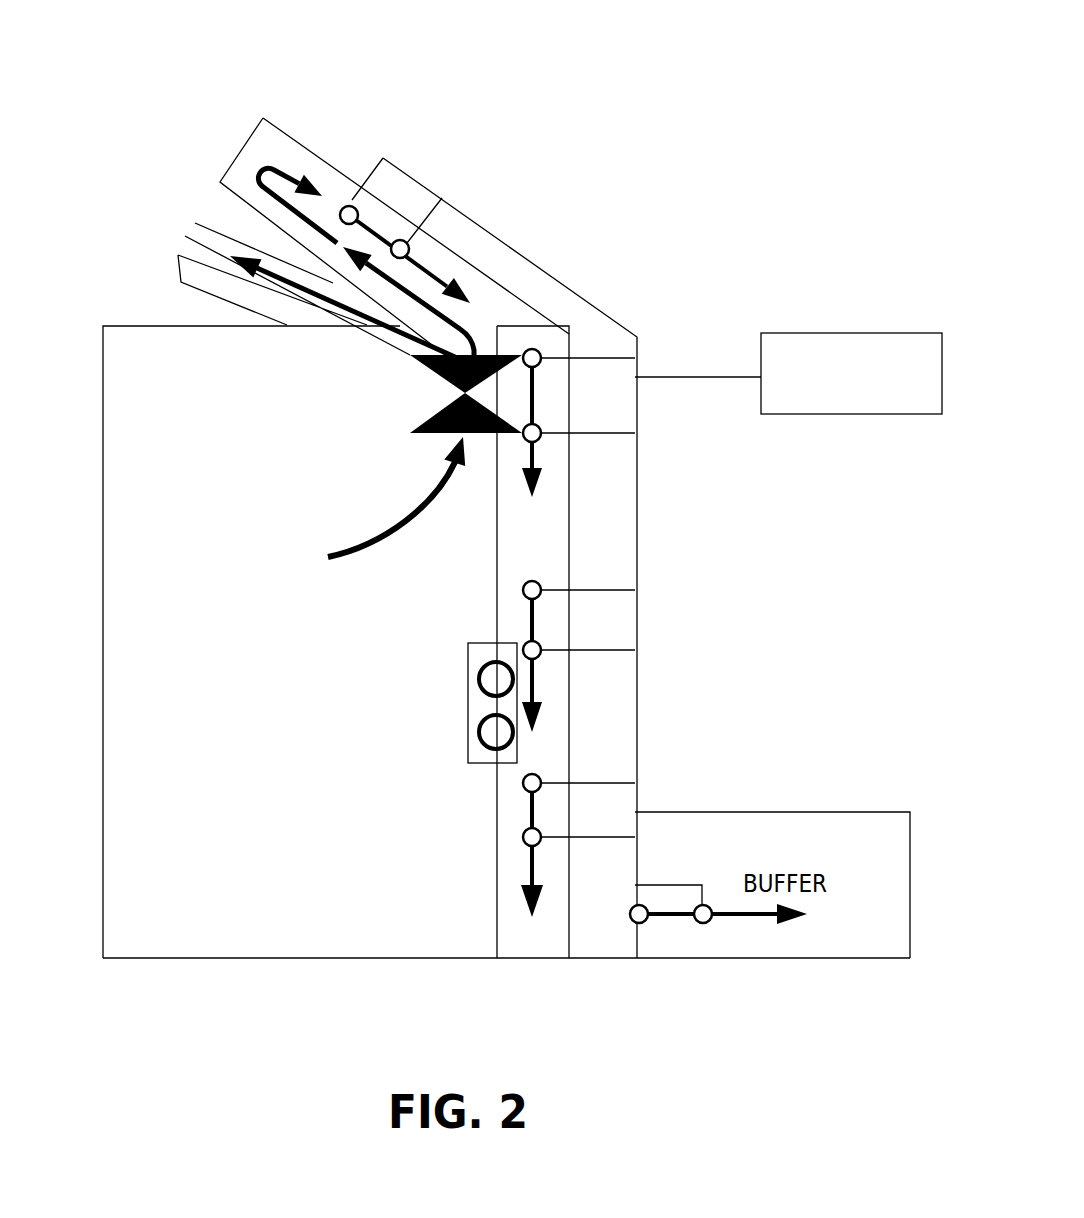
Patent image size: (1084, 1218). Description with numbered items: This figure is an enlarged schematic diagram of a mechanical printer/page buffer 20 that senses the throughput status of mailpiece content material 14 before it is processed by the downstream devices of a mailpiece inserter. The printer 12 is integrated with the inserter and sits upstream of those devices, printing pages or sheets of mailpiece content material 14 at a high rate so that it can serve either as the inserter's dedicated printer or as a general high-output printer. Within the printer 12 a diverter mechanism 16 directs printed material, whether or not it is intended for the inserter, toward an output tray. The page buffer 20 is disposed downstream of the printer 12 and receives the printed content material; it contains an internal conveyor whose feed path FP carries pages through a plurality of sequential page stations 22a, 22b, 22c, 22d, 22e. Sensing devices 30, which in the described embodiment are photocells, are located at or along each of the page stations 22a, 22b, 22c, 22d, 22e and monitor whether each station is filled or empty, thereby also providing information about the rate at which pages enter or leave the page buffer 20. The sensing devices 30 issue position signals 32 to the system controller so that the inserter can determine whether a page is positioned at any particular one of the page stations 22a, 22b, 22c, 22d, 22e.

The printer 12 is at (163, 340).
The mailpiece content material 14 is at (208, 230).
The diverter mechanism 16 is at (466, 356).
The mechanical printer/page buffer 20 is at (585, 275).
The page station 22a is at (388, 218).
The page station 22b is at (545, 400).
The page station 22c is at (560, 636).
The page station 22d is at (550, 812).
The page station 22e is at (697, 873).
The sensing devices 30 is at (538, 643).
The position signals 32 is at (866, 333).
The feed path FP is at (263, 165).